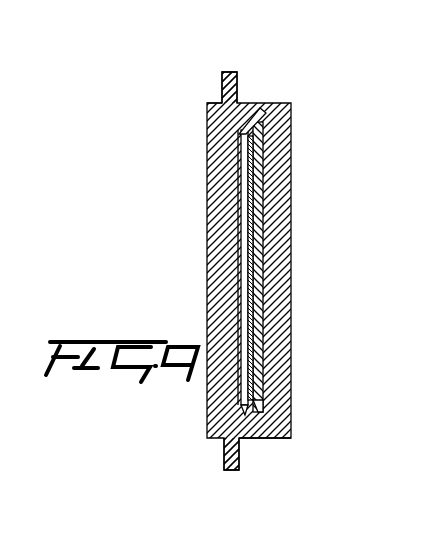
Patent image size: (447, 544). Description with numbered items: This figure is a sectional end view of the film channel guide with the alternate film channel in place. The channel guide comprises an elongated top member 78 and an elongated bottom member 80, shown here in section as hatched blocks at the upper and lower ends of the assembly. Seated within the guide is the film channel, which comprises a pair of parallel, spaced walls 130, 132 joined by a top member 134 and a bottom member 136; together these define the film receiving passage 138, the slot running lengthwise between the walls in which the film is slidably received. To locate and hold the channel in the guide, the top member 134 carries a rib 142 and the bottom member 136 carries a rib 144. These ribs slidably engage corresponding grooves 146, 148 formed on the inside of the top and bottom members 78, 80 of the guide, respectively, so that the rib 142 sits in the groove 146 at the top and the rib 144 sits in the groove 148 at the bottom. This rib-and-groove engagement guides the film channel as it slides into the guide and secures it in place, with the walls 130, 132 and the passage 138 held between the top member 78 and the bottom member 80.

The top member 78 is at (250, 97).
The bottom member 80 is at (268, 438).
The wall 130 is at (238, 173).
The wall 132 is at (263, 201).
The top member 134 is at (258, 151).
The bottom member 136 is at (258, 393).
The film receiving passage 138 is at (253, 271).
The rib 142 is at (264, 111).
The rib 144 is at (232, 447).
The groove 146 is at (207, 126).
The groove 148 is at (245, 413).